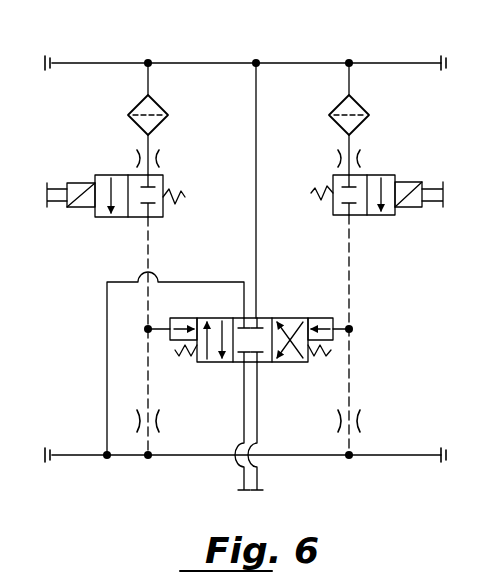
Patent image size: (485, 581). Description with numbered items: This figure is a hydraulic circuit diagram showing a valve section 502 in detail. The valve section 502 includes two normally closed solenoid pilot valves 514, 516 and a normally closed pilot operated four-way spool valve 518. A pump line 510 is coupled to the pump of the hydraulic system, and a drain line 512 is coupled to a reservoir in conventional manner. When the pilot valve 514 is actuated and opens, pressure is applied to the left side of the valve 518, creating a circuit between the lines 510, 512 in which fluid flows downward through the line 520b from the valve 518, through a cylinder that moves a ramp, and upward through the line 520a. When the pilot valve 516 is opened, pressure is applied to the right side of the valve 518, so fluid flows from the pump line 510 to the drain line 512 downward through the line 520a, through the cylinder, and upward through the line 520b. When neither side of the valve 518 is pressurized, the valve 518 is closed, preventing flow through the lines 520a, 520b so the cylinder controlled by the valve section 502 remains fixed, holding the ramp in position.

The valve section 502 is at (430, 39).
The pump line 510 is at (74, 63).
The drain line 512 is at (104, 456).
The solenoid pilot valve 514 is at (162, 176).
The solenoid pilot valve 516 is at (385, 176).
The pilot operated four-way spool valve 518 is at (284, 318).
The line 520a is at (246, 476).
The line 520b is at (258, 476).